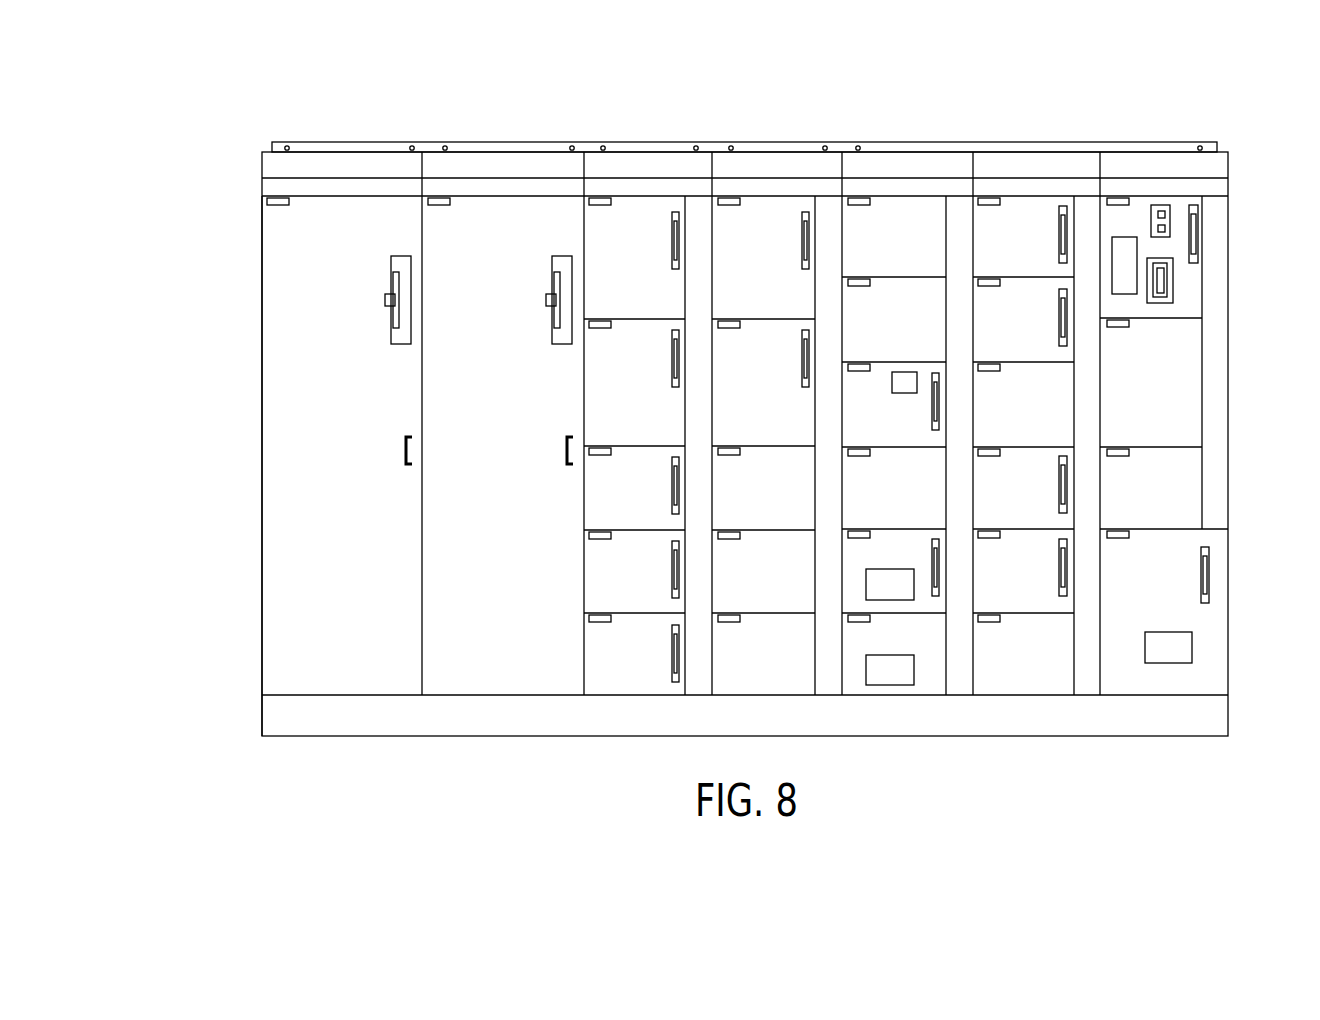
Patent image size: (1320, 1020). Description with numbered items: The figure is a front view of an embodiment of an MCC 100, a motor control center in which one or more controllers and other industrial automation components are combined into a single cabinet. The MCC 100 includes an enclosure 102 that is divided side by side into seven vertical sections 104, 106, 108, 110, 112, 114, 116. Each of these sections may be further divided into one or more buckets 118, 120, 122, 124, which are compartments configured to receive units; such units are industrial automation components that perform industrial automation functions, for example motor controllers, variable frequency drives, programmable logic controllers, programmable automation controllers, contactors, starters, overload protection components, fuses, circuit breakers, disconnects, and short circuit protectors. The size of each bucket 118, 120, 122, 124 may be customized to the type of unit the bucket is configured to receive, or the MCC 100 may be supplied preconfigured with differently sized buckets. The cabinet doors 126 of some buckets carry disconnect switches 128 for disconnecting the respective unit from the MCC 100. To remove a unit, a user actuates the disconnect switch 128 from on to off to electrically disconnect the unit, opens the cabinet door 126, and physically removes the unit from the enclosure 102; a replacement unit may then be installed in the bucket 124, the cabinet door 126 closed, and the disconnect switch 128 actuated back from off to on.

The MCC 100 is at (275, 165).
The enclosure 102 is at (260, 443).
The vertical section 104 is at (353, 142).
The vertical section 106 is at (510, 142).
The vertical section 108 is at (647, 142).
The vertical section 110 is at (780, 142).
The vertical section 112 is at (910, 142).
The vertical section 114 is at (1030, 142).
The vertical section 116 is at (1203, 370).
The bucket 118 is at (1188, 287).
The bucket 120 is at (1160, 393).
The bucket 122 is at (1172, 485).
The bucket 124 is at (1206, 582).
The cabinet door 126 is at (1182, 650).
The disconnect switch 128 is at (1210, 574).